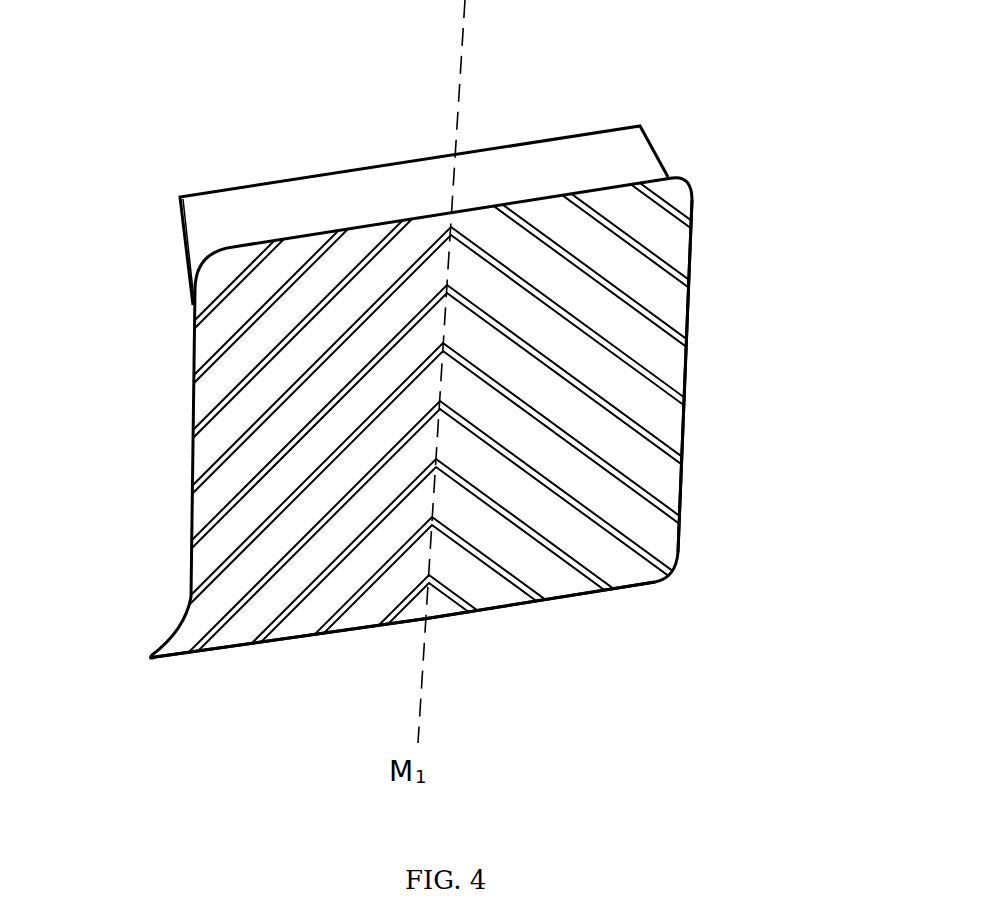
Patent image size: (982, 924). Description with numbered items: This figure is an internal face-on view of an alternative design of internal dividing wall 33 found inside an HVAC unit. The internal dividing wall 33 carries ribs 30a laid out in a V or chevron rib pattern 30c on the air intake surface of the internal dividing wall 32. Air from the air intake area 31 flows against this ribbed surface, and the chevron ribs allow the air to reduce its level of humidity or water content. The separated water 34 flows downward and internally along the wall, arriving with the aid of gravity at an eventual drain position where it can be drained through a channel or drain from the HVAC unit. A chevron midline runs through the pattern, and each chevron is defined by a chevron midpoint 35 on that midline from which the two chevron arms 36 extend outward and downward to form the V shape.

The ribs 30a is at (287, 380).
The chevron rib pattern 30c is at (210, 570).
The air intake area 31 is at (673, 147).
The air intake surface of the internal dividing wall 32 is at (655, 420).
The internal dividing wall 33 is at (678, 622).
The water 34 is at (643, 357).
The chevron midpoint 35 is at (440, 467).
The chevron arms 36 is at (510, 327).